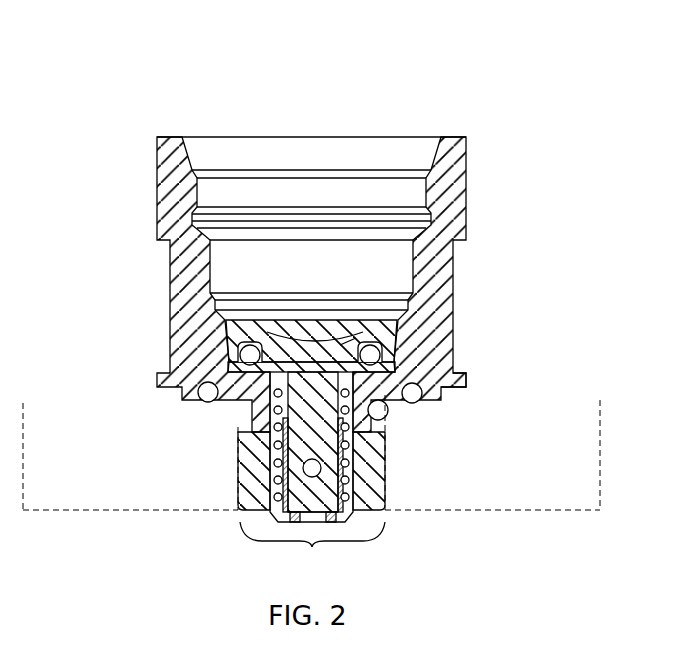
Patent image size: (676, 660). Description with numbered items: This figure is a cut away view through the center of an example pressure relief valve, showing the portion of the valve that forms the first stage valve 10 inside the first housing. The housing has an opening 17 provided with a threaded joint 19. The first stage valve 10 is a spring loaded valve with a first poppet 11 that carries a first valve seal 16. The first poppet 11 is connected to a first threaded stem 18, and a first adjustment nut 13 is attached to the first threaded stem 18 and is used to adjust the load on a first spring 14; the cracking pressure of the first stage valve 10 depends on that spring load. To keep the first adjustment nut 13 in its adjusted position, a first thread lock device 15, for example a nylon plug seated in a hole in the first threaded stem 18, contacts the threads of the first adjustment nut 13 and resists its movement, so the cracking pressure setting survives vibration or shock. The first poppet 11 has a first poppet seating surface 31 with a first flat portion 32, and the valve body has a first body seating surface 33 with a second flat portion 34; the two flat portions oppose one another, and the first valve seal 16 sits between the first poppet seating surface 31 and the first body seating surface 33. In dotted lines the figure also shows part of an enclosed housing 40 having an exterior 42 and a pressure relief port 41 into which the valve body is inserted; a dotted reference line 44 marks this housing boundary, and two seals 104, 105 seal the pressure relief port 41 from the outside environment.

The first stage valve 10 is at (128, 344).
The first poppet 11 is at (363, 324).
The first adjustment nut 13 is at (259, 493).
The first spring 14 is at (274, 456).
The first thread lock device 15 is at (314, 471).
The first valve seal 16 is at (372, 358).
The opening 17 is at (388, 148).
The first threaded stem 18 is at (303, 431).
The threaded joint 19 is at (430, 195).
The first poppet seating surface 31 is at (272, 347).
The first flat portion 32 is at (350, 343).
The first body seating surface 33 is at (266, 374).
The second flat portion 34 is at (352, 376).
The housing 40 is at (80, 490).
The pressure relief port 41 is at (312, 548).
The exterior 42 is at (477, 402).
The reference line 44 is at (422, 510).
The seal 104 is at (385, 418).
The seal 105 is at (418, 402).